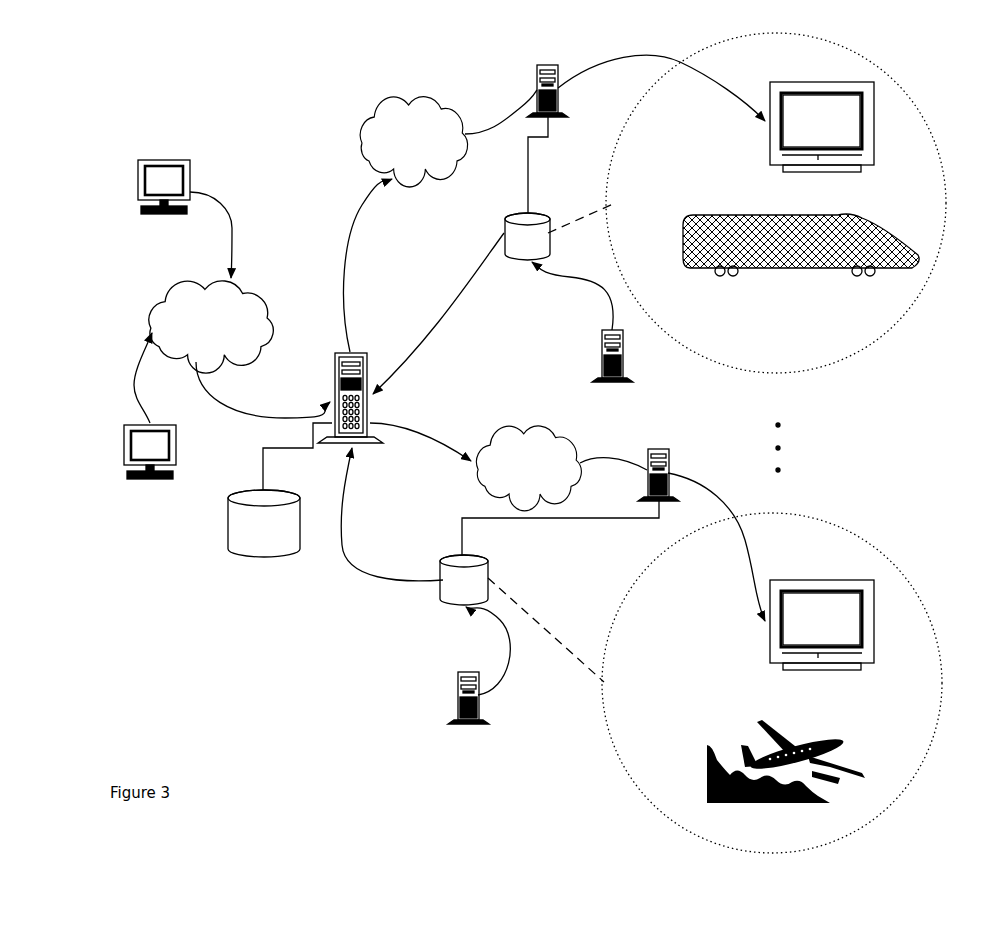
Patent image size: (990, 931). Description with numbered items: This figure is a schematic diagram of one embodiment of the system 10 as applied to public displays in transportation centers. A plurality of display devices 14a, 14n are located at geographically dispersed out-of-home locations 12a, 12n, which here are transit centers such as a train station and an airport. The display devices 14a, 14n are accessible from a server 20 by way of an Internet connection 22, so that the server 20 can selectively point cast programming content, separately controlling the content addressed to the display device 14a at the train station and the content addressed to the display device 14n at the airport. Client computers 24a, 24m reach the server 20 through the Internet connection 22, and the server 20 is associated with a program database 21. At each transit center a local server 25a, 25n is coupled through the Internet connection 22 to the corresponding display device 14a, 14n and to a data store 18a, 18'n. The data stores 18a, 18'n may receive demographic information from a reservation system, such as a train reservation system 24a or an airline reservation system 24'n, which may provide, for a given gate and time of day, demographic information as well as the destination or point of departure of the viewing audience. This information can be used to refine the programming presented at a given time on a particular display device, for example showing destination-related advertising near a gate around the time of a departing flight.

The system 10 is at (184, 637).
The out-of-home location 12a is at (680, 182).
The out-of-home location 12n is at (710, 641).
The display device 14a is at (873, 105).
The display device 14n is at (875, 612).
The data store 18a is at (512, 262).
The database 18'n is at (446, 596).
The server 20 is at (332, 380).
The program database 21 is at (227, 520).
The Internet connection 22 is at (262, 320).
The reservation system 24a is at (163, 160).
The client m 24m is at (122, 452).
The airline reservation system 24'n is at (457, 680).
The local server at train station 25a is at (547, 65).
The local server at airport 25n is at (648, 485).